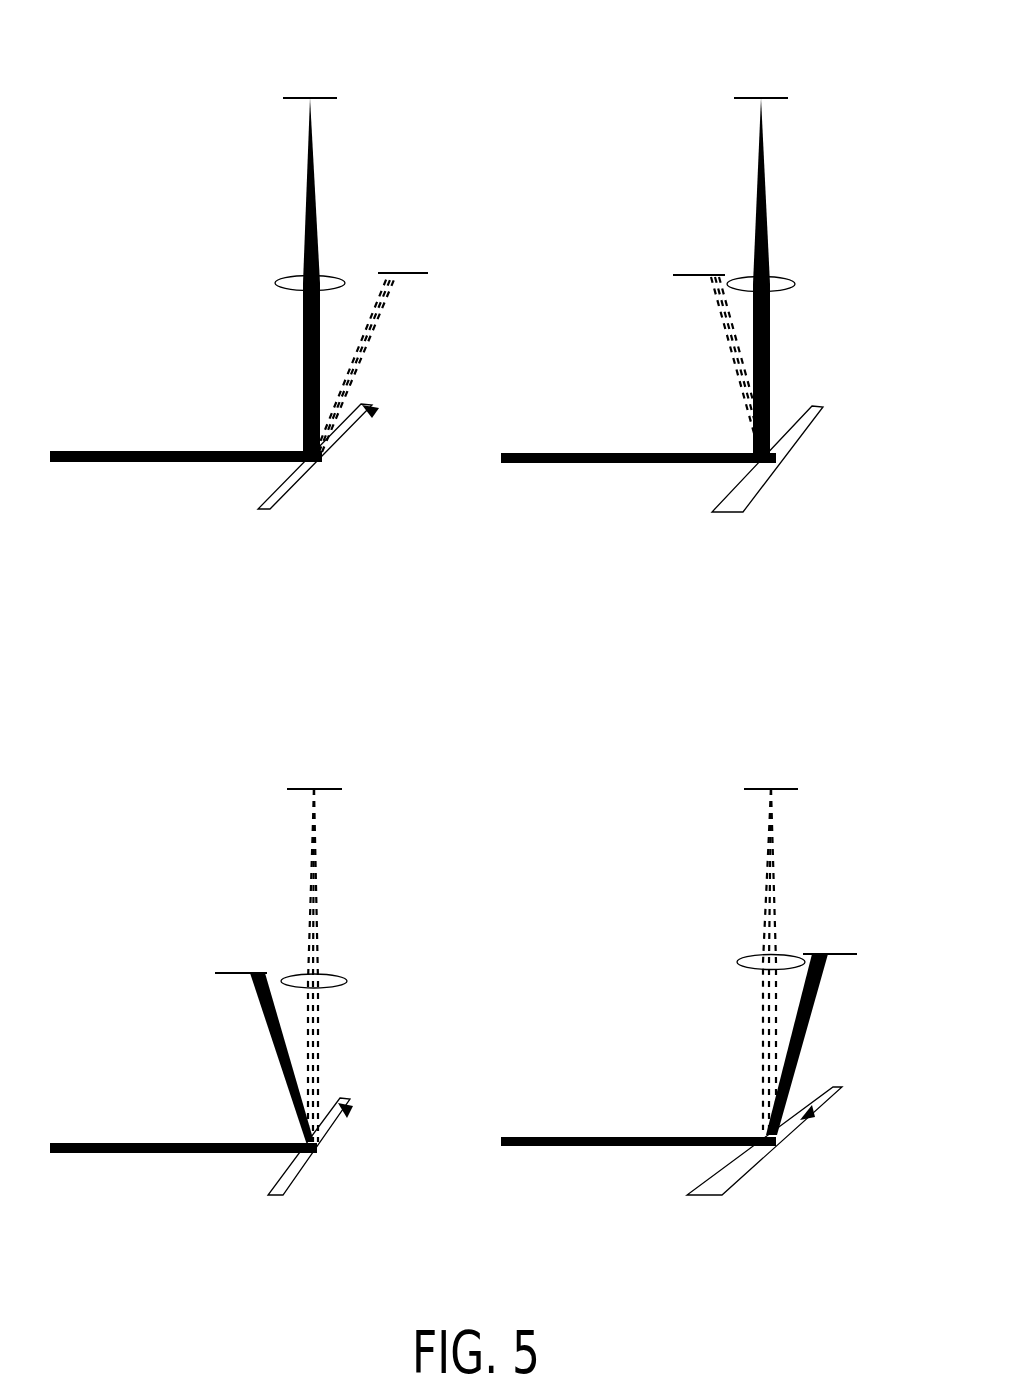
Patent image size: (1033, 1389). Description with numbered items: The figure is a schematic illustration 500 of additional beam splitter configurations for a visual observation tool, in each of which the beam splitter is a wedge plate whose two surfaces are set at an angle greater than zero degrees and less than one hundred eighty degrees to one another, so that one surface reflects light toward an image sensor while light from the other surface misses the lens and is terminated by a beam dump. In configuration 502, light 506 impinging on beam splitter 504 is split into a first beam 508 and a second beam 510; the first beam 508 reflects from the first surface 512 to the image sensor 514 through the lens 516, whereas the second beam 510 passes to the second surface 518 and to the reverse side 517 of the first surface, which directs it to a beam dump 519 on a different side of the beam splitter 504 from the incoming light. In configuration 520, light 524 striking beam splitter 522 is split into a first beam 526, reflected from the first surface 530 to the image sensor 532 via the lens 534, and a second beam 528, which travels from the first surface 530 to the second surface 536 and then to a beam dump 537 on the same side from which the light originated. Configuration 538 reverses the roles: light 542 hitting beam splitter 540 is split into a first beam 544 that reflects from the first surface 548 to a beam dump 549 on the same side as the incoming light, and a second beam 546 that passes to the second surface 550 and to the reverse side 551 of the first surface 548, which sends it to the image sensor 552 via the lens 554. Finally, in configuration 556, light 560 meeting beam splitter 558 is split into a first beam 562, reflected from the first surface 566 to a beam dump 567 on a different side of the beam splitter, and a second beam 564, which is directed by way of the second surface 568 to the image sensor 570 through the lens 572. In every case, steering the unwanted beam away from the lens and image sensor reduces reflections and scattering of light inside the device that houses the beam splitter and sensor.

The schematic illustration 500 is at (150, 47).
The configuration 502 is at (170, 214).
The beam splitter 504 is at (358, 460).
The light 506 is at (206, 463).
The first beam 508 is at (303, 392).
The second beam 510 is at (353, 372).
The first surface 512 is at (335, 484).
The image sensor 514 is at (328, 100).
The lens 516 is at (344, 276).
The reverse side 517 is at (377, 410).
The second surface 518 is at (362, 428).
The beam dump 519 is at (415, 276).
The configuration 520 is at (670, 214).
The beam splitter 522 is at (799, 473).
The light 524 is at (656, 464).
The first beam 526 is at (768, 347).
The second beam 528 is at (738, 357).
The first surface 530 is at (774, 485).
The image sensor 532 is at (779, 100).
The lens 534 is at (796, 277).
The second surface 536 is at (794, 447).
The beam dump 537 is at (692, 278).
The configuration 538 is at (170, 907).
The beam splitter 540 is at (351, 1163).
The light 542 is at (206, 1154).
The first beam 544 is at (276, 1055).
The second beam 546 is at (319, 1052).
The first surface 548 is at (323, 1177).
The beam dump 549 is at (238, 975).
The second surface 550 is at (341, 1127).
The reverse side 551 is at (353, 1106).
The image sensor 552 is at (327, 791).
The lens 554 is at (333, 975).
The configuration 556 is at (626, 907).
The beam splitter 558 is at (786, 1153).
The light 560 is at (655, 1147).
The first beam 562 is at (802, 1037).
The second beam 564 is at (765, 1035).
The first surface 566 is at (763, 1172).
The beam dump 567 is at (840, 957).
The second surface 568 is at (798, 1128).
The image sensor 570 is at (783, 791).
The lens 572 is at (796, 953).